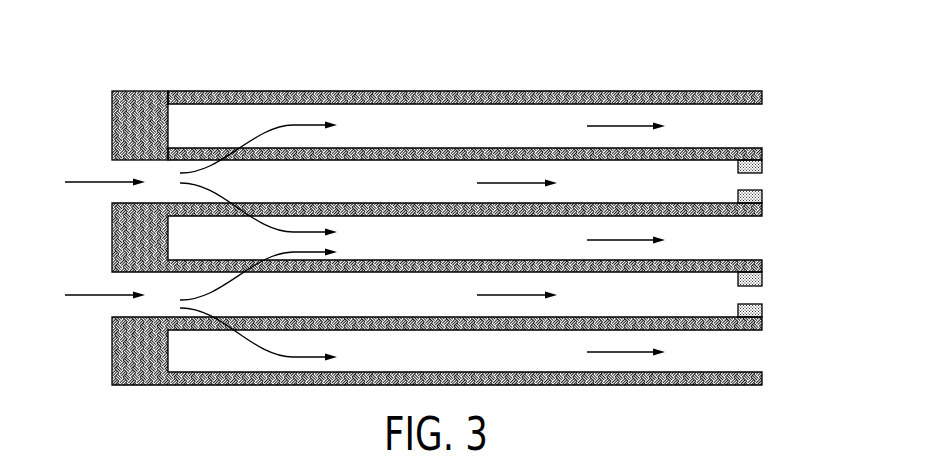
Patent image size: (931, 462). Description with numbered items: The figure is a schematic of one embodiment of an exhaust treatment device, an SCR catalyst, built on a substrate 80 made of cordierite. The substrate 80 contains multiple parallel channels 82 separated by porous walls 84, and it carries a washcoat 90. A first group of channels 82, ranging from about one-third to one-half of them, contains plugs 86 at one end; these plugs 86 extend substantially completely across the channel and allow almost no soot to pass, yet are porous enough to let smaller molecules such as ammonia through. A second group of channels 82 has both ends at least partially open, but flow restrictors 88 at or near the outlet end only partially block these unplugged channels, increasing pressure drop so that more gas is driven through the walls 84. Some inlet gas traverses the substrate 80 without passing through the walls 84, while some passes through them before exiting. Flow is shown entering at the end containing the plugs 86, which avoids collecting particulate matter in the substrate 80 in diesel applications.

The substrate 80 is at (253, 66).
The channels 82 is at (407, 172).
The porous walls 84 is at (487, 157).
The plugs 86 is at (130, 125).
The flow restrictors 88 is at (762, 167).
The washcoat 90 is at (557, 157).